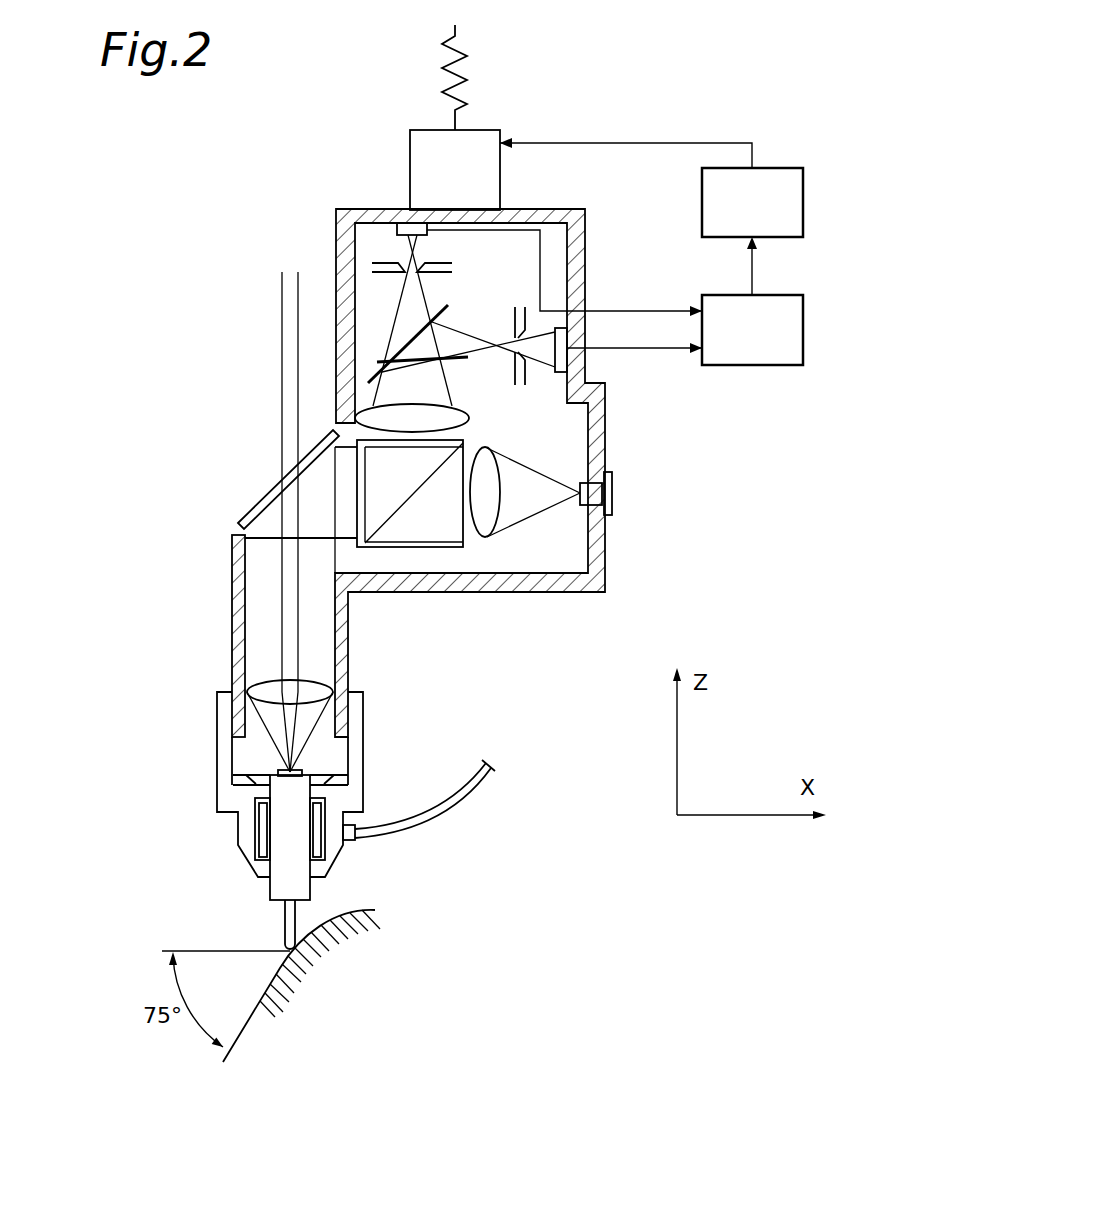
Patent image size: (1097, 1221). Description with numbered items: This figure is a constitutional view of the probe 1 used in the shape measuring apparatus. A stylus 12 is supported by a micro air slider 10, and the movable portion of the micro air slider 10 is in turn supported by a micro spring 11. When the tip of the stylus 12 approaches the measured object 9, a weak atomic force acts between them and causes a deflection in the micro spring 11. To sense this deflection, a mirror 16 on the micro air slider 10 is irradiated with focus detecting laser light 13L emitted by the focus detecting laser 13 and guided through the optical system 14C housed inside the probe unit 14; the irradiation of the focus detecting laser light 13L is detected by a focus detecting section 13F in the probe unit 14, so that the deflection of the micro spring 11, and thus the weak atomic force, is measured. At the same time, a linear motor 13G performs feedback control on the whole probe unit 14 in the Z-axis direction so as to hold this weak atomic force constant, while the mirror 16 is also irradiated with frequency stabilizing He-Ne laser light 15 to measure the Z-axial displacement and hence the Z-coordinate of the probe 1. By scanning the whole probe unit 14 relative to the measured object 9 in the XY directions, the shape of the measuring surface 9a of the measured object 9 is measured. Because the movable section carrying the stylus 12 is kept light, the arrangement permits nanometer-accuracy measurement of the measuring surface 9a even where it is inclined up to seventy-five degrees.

The probe 1 is at (163, 312).
The measured object 9 is at (323, 958).
The measuring surface 9a is at (343, 915).
The micro air slider 10 is at (285, 845).
The micro spring 11 is at (258, 772).
The stylus 12 is at (285, 918).
The focus detecting laser 13 is at (613, 487).
The focus detecting section 13F is at (800, 271).
The linear motor 13G is at (475, 145).
The focus detecting laser light 13L is at (531, 507).
The probe unit 14 is at (337, 403).
The optical system 14C is at (550, 440).
The frequency stabilizing He-Ne laser light 15 is at (292, 305).
The mirror 16 is at (252, 715).